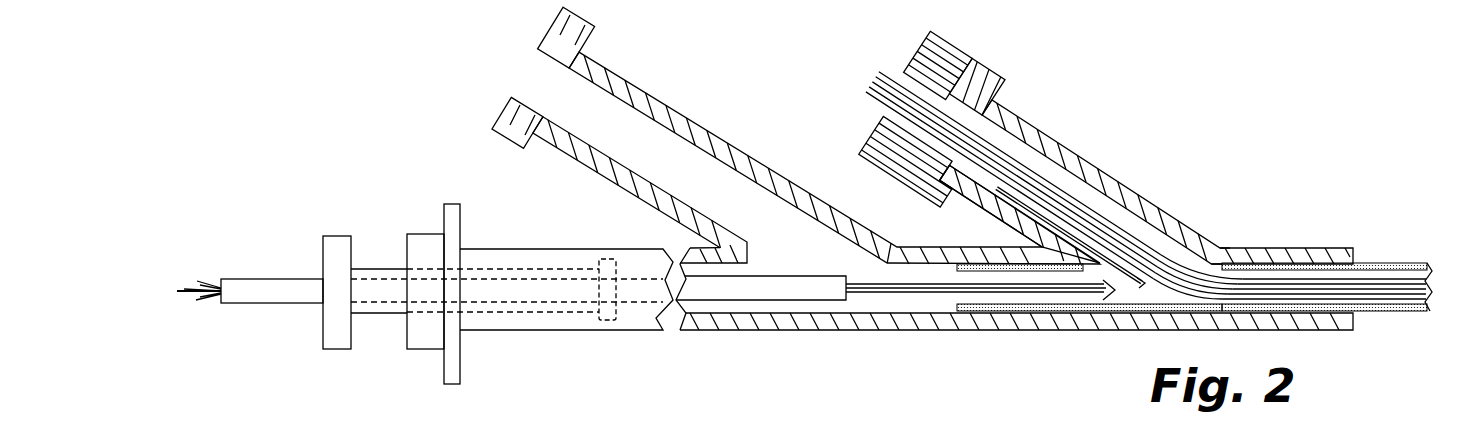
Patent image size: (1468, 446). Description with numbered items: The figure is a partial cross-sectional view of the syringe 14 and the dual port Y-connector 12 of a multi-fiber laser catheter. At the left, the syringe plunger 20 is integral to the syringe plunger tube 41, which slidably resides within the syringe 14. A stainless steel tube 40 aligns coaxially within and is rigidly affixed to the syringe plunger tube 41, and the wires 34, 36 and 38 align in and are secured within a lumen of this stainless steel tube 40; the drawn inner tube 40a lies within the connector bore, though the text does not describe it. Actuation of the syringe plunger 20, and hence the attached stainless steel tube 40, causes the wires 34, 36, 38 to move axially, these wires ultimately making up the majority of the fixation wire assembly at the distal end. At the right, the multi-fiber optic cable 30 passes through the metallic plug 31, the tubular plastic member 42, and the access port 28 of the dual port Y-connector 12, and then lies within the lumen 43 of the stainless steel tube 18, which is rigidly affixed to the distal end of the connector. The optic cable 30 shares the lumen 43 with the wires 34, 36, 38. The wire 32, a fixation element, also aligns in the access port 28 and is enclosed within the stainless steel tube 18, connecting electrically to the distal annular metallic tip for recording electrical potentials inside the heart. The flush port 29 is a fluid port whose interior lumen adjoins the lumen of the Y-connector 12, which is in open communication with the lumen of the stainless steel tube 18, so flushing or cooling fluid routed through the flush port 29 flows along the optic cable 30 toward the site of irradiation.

The dual port Y-connector 12 is at (1056, 99).
The syringe 14 is at (509, 236).
The stainless steel tube 18 is at (1374, 262).
The syringe plunger 20 is at (340, 236).
The access port 28 is at (1115, 187).
The flush port 29 is at (612, 70).
The multi-fiber optic cable 30 is at (871, 100).
The metallic plug 31 is at (934, 37).
The wire 32 is at (1131, 234).
The wire 34 is at (178, 291).
The wire 36 is at (208, 284).
The wire 38 is at (200, 301).
The stainless steel tube 40 is at (281, 303).
The inner tube 40a is at (850, 300).
The syringe plunger tube 41 is at (371, 250).
The tubular plastic member 42 is at (896, 70).
The lumen 43 is at (1203, 237).